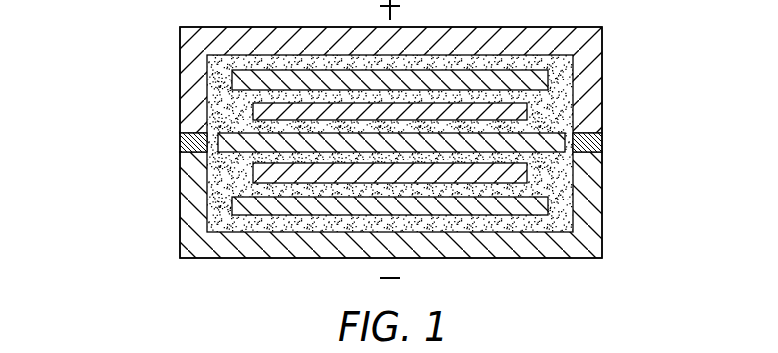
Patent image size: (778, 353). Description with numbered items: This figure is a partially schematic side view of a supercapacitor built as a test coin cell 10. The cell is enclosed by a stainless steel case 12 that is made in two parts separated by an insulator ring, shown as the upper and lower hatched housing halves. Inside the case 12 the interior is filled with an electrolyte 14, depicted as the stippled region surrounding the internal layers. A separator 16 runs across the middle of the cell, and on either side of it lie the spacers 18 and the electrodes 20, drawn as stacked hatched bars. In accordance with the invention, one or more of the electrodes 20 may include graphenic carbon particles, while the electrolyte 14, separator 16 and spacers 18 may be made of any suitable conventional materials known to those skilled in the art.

The test coin cell 10 is at (125, 46).
The stainless steel case 12 is at (184, 105).
The electrolyte 14 is at (558, 100).
The separator 16 is at (552, 143).
The spacers 18 is at (548, 80).
The electrodes 20 is at (527, 112).